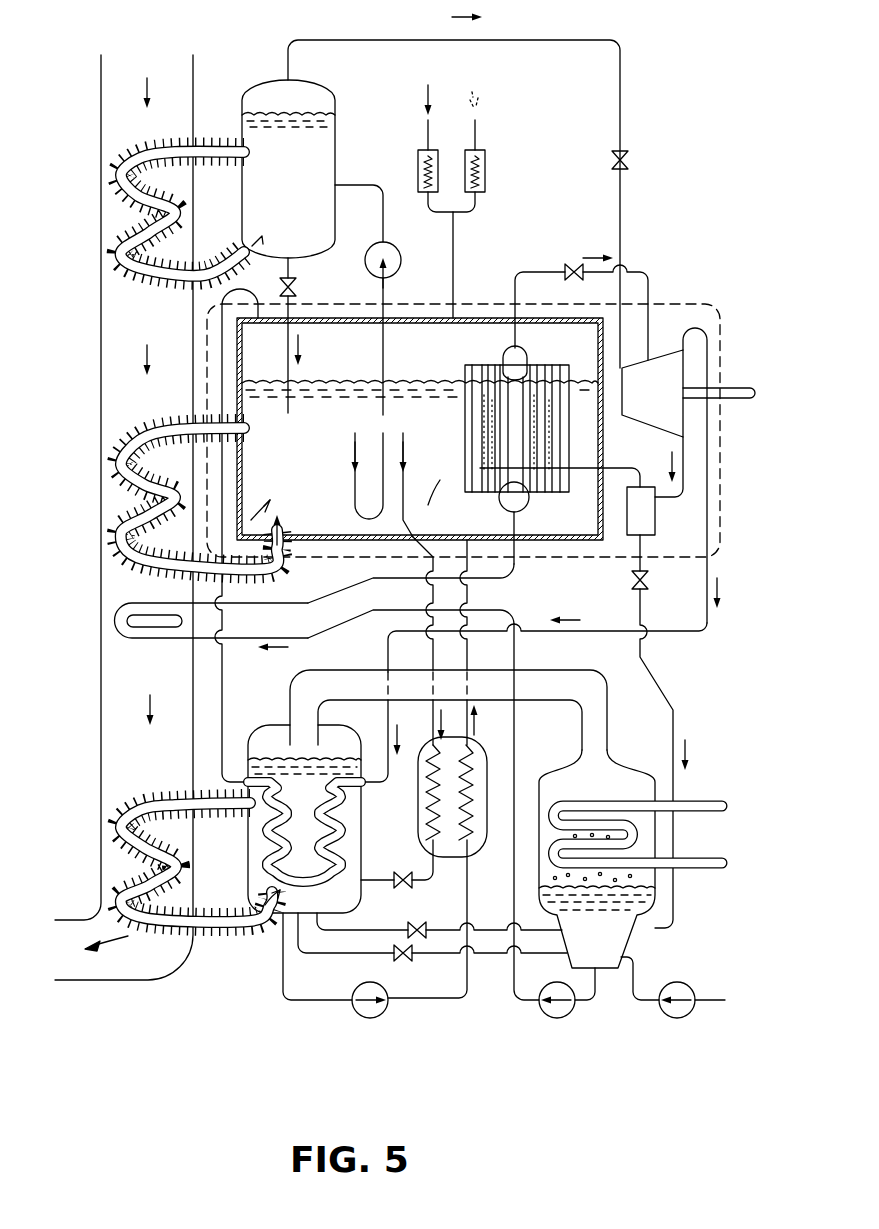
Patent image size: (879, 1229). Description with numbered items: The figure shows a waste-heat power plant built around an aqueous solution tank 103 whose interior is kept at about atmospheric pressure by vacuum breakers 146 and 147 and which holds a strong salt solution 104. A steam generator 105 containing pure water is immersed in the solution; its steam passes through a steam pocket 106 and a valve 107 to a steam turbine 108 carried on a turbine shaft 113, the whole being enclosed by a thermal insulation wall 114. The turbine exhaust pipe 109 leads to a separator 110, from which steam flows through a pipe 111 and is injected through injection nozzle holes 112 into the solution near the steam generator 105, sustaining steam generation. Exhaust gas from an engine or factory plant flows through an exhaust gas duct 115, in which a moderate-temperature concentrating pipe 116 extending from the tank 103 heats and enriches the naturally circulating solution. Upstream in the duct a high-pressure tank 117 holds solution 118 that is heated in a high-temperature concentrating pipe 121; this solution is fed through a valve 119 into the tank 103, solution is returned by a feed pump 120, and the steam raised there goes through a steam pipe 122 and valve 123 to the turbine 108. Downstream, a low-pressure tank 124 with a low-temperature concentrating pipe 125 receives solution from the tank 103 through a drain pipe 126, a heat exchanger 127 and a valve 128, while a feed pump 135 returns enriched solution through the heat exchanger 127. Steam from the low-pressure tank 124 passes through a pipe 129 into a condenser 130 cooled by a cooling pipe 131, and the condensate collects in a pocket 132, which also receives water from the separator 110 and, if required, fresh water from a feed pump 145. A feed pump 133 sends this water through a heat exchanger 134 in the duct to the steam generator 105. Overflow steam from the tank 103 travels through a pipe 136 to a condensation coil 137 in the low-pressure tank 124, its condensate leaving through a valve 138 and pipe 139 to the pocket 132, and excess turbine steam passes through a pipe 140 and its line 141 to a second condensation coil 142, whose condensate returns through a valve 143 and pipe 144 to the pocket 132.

The aqueous solution tank 103 is at (382, 429).
The strong solution 104 is at (347, 390).
The steam generator 105 is at (470, 368).
The steam pocket 106 is at (508, 353).
The valve 107 is at (574, 264).
The steam turbine 108 is at (668, 343).
The exhaust pipe 109 is at (655, 500).
The separator 110 is at (648, 538).
The pipe 111 is at (590, 503).
The injection nozzle holes 112 is at (500, 508).
The turbine shaft 113 is at (748, 388).
The thermal insulation wall 114 is at (692, 306).
The exhaust gas duct 115 is at (101, 120).
The moderate-temperature concentrating pipe 116 is at (112, 442).
The high-pressure tank 117 is at (307, 153).
The aqueous solution 118 is at (335, 125).
The valve 119 is at (296, 288).
The feed pump 120 is at (365, 262).
The high-temperature concentrating pipe 121 is at (112, 173).
The steam pipe 122 is at (553, 40).
The valve 123 is at (630, 163).
The low-pressure tank 124 is at (282, 802).
The low-temperature concentrating pipe 125 is at (118, 812).
The drain pipe 126 is at (369, 514).
The heat exchanger 127 is at (487, 755).
The valve 128 is at (400, 872).
The pipe 129 is at (584, 691).
The condenser 130 is at (630, 849).
The cooling pipe 131 is at (632, 838).
The pocket 132 is at (604, 918).
The feed pump 133 is at (552, 1016).
The heat exchanger 134 is at (115, 618).
The feed pump 135 is at (362, 1016).
The pipe 136 is at (218, 303).
The condensation coil 137 is at (264, 832).
The valve 138 is at (397, 962).
The pipe 139 is at (495, 958).
The pipe 140 is at (710, 333).
The pipe 141 is at (593, 631).
The second condensation coil 142 is at (336, 757).
The valve 143 is at (420, 926).
The pipe 144 is at (496, 930).
The feed pump 145 is at (672, 1016).
The vacuum breaker 146 is at (487, 170).
The vacuum breaker 147 is at (418, 168).